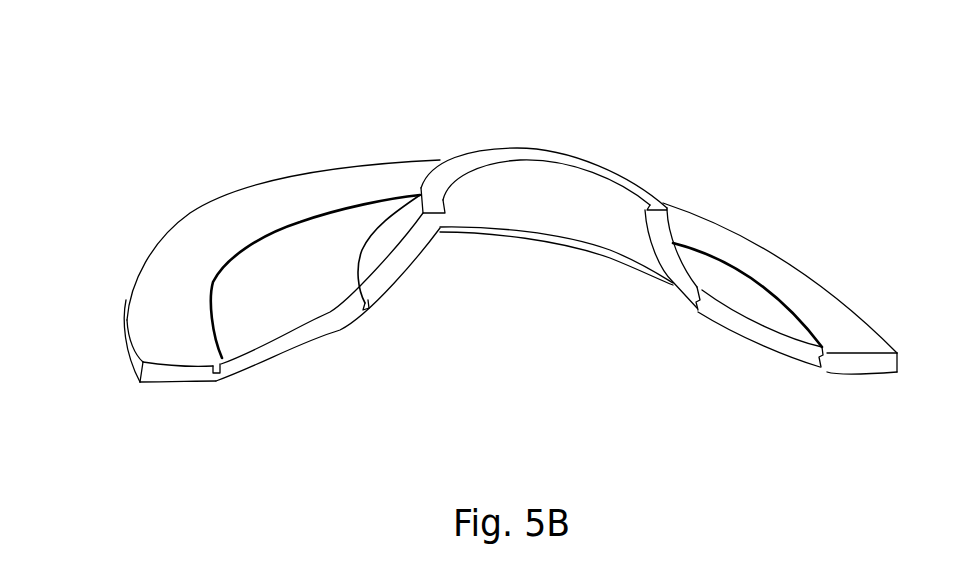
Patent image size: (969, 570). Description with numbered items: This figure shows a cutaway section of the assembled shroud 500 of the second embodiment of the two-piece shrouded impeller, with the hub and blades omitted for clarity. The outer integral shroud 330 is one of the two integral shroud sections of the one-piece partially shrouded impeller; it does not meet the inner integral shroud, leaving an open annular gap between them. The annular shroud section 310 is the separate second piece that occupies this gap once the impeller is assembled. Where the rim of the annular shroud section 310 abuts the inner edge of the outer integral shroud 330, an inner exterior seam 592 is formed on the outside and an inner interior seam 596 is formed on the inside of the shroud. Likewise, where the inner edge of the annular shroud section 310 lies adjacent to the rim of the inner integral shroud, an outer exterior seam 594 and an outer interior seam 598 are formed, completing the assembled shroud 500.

The assembled shroud 500 is at (125, 85).
The outer integral shroud 330 is at (240, 212).
The annular shroud section 310 is at (320, 255).
The inner exterior seam 592 is at (360, 255).
The outer exterior seam 594 is at (213, 282).
The inner interior seam 596 is at (366, 312).
The outer interior seam 598 is at (213, 370).